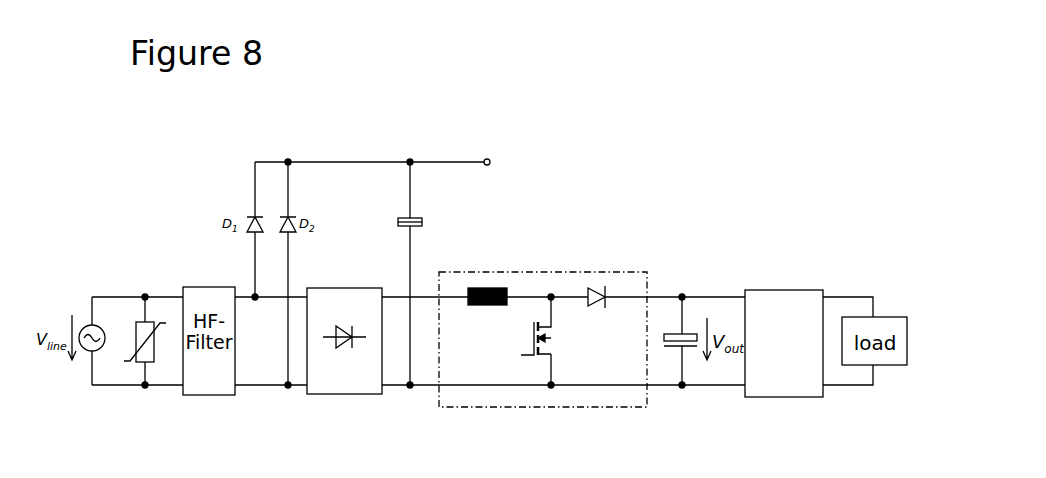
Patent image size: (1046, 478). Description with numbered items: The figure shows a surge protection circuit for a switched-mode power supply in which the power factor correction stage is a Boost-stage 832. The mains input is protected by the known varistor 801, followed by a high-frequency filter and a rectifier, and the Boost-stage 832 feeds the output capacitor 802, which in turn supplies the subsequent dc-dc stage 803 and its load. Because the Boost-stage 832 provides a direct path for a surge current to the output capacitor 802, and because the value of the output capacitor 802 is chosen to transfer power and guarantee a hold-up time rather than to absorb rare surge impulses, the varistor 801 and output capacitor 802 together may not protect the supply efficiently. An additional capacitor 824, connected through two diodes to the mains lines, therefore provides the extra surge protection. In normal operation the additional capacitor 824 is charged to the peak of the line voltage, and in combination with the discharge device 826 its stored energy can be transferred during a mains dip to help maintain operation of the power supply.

The varistor 801 is at (140, 318).
The additional capacitor C2 824 is at (415, 217).
The discharge device 826 is at (558, 158).
The Boost-stage 832 is at (620, 270).
The output capacitor C 802 is at (685, 335).
The dc-dc stage 803 is at (799, 289).